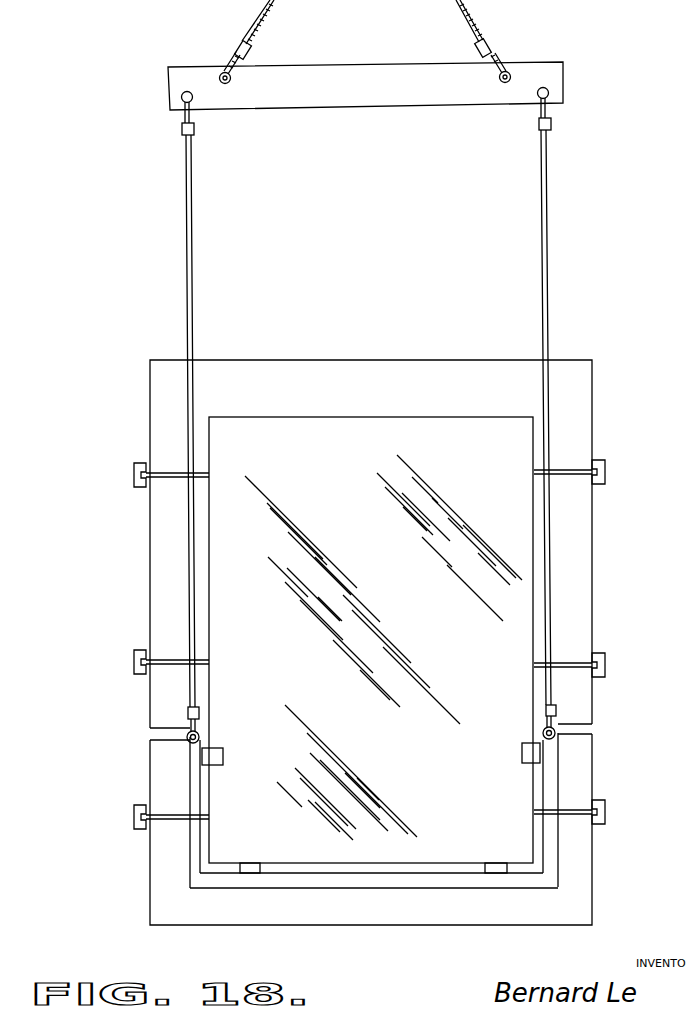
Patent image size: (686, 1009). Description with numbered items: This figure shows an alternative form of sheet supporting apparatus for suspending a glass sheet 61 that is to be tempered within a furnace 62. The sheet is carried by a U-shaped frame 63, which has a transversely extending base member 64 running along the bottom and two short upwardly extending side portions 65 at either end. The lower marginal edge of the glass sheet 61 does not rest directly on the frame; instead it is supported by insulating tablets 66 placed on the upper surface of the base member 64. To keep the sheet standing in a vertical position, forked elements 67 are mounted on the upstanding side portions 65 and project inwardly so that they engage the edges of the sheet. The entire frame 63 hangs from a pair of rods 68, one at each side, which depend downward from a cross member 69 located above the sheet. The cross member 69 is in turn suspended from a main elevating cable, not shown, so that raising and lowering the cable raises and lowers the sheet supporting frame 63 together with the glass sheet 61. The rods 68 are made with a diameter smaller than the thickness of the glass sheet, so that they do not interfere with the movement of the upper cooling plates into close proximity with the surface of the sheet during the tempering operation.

The glass sheet 61 is at (218, 521).
The furnace 62 is at (580, 561).
The U-shaped frame 63 is at (265, 882).
The base member 64 is at (423, 878).
The side portions 65 is at (191, 843).
The insulating tablets 66 is at (262, 868).
The forked elements 67 is at (225, 757).
The rods 68 is at (188, 388).
The cross member 69 is at (372, 93).